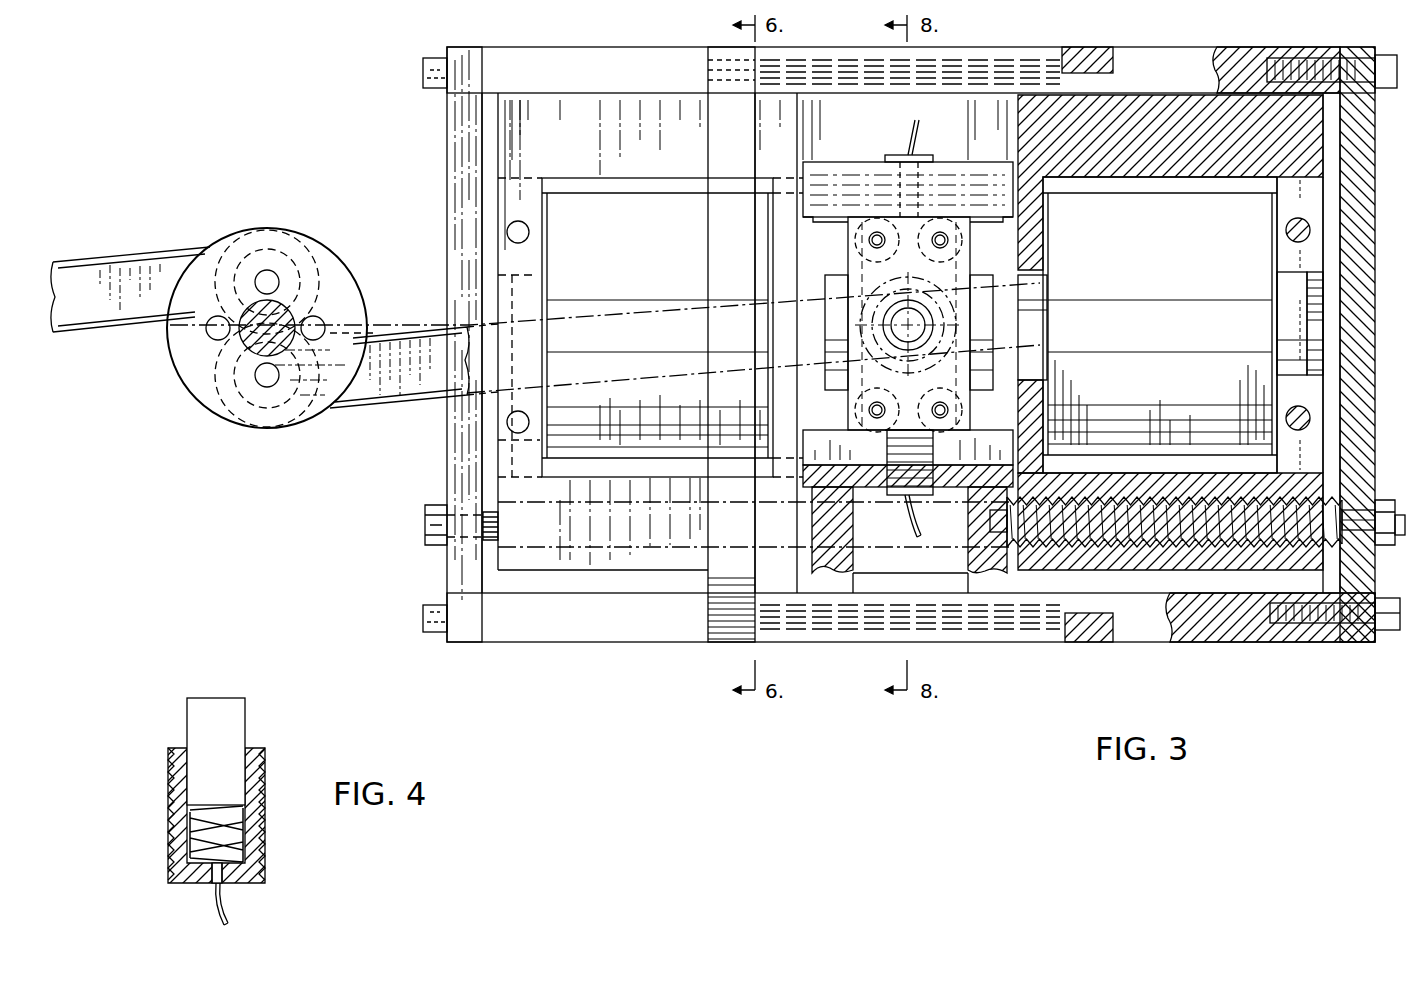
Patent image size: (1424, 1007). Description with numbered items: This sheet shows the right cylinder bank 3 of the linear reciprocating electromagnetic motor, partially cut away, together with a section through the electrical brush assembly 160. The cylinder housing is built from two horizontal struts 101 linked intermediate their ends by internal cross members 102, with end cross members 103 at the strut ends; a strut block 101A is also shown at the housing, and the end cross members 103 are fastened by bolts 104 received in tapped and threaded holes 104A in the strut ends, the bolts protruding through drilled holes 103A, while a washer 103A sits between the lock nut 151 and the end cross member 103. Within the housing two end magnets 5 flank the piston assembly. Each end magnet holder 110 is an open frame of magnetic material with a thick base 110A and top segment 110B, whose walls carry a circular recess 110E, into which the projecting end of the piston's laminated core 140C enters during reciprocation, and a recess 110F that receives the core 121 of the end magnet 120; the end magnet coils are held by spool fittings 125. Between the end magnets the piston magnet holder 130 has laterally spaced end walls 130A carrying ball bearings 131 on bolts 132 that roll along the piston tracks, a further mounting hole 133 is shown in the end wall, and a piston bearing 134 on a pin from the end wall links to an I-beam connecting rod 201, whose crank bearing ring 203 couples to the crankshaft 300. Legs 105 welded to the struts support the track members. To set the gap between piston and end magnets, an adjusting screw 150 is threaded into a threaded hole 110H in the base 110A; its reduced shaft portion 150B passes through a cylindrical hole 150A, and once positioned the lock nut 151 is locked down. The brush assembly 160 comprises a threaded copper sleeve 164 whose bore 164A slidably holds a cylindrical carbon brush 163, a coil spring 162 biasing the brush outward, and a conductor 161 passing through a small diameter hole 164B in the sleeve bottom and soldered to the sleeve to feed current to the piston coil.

In FIG. 3, the right cylinder bank 3 is at (1377, 446).
In FIG. 3, the end magnets 5 is at (1328, 203).
In FIG. 3, the horizontal struts 101 is at (1020, 60).
In FIG. 3, the frame block 101A is at (1065, 625).
In FIG. 3, the internal cross members 102 is at (712, 611).
In FIG. 3, the end cross members 103 is at (1372, 402).
In FIG. 3, the drilled holes 103A is at (1358, 640).
In FIG. 3, the bolts 104 is at (433, 612).
In FIG. 3, the tapped and threaded holes 104A is at (1305, 640).
In FIG. 3, the legs 105 is at (972, 510).
In FIG. 3, the end magnet holder 110 is at (1328, 143).
In FIG. 3, the base 110A is at (1218, 553).
In FIG. 3, the top segments 110B is at (1093, 162).
In FIG. 3, the circular recess 110E is at (1040, 290).
In FIG. 3, the circular recess 110F is at (1318, 294).
In FIG. 3, the threaded hole 110H is at (1040, 530).
In FIG. 3, the end magnets 120 is at (576, 183).
In FIG. 3, the core 121 is at (1290, 291).
In FIG. 3, the spool fittings 125 is at (1380, 343).
In FIG. 3, the piston magnet holder 130 is at (978, 357).
In FIG. 3, the end-walls 130A is at (972, 410).
In FIG. 3, the ball bearings 131 is at (940, 222).
In FIG. 3, the bolts 132 is at (868, 240).
In FIG. 3, the mounting hole 133 is at (895, 340).
In FIG. 3, the piston bearing 134 is at (920, 320).
In FIG. 3, the laminated core 140C is at (985, 326).
In FIG. 3, the adjusting screw 150 is at (1405, 522).
In FIG. 3, the cylindrical hole 150A is at (1320, 540).
In FIG. 3, the shaft portion 150B is at (1005, 540).
In FIG. 3, the lock nut 151 is at (1390, 548).
In FIG. 3, the electrical brush assembly 160 is at (892, 155).
In FIG. 4, the electrical brush assembly 160 is at (231, 791).
In FIG. 3, the conductor 161 is at (910, 525).
In FIG. 4, the conductor 161 is at (215, 910).
In FIG. 4, the coil spring 162 is at (233, 832).
In FIG. 4, the carbon brush 163 is at (222, 700).
In FIG. 4, the copper sleeve 164 is at (256, 750).
In FIG. 4, the bore 164A is at (190, 780).
In FIG. 4, the small diameter hole 164B is at (228, 887).
In FIG. 3, the I-beam connecting rods 201 is at (122, 310).
In FIG. 3, the crank bearing ring 203 is at (242, 420).
In FIG. 3, the crankshaft 300 is at (283, 300).